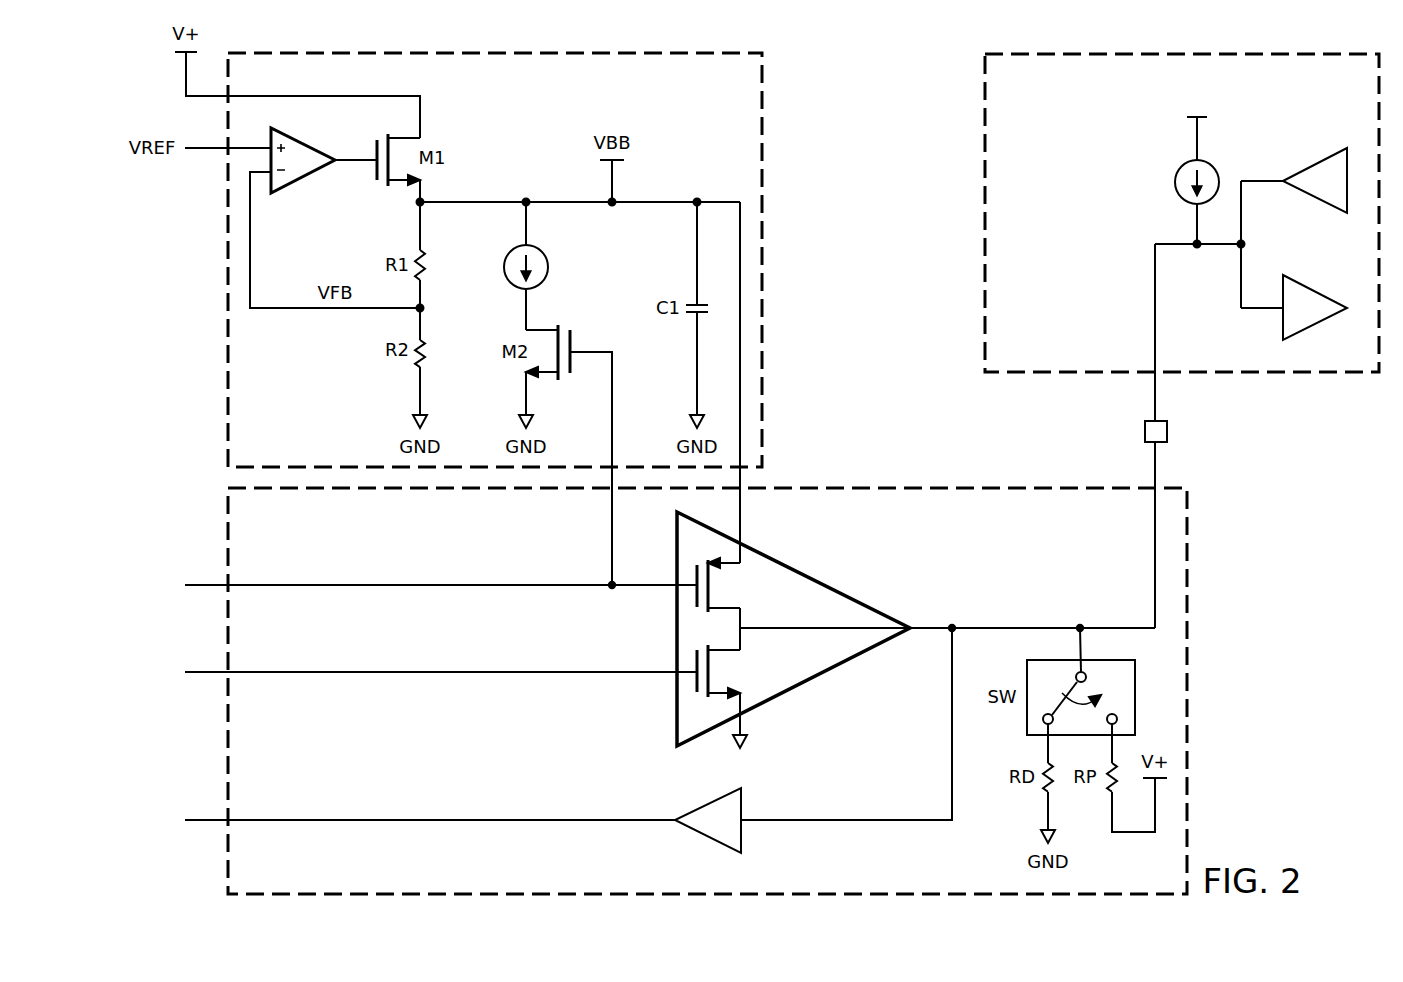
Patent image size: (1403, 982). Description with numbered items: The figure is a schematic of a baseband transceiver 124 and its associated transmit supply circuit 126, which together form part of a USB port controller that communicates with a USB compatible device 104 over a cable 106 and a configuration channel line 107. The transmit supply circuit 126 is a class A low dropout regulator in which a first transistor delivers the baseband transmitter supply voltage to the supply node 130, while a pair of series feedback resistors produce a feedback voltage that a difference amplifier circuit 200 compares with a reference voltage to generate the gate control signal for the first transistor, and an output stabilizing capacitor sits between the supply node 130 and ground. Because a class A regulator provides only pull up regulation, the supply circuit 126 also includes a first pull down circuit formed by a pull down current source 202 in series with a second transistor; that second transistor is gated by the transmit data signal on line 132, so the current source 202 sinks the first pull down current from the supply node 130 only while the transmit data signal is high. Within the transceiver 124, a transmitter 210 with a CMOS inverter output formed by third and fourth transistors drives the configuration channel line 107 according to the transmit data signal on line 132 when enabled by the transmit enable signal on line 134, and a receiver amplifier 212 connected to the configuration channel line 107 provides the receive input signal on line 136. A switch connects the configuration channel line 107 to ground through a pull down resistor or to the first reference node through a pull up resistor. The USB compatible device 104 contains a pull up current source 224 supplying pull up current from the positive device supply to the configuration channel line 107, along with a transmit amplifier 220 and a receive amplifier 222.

The USB compatible device 104 is at (977, 185).
The cable 106 is at (1168, 428).
The CC line 107 is at (1101, 626).
The baseband transceiver 124 is at (1001, 481).
The transmit supply circuit 126 is at (770, 103).
The supply node 130 is at (743, 513).
The line 132 is at (430, 589).
The line 134 is at (430, 676).
The line 136 is at (430, 824).
The difference amplifier circuit 200 is at (312, 178).
The pull down current source 202 is at (516, 285).
The transmitter 210 is at (677, 630).
The receiver amplifier 212 is at (742, 835).
The transmit amplifier 220 is at (1313, 164).
The receive amplifier 222 is at (1321, 290).
The pull up current source 224 is at (1213, 162).